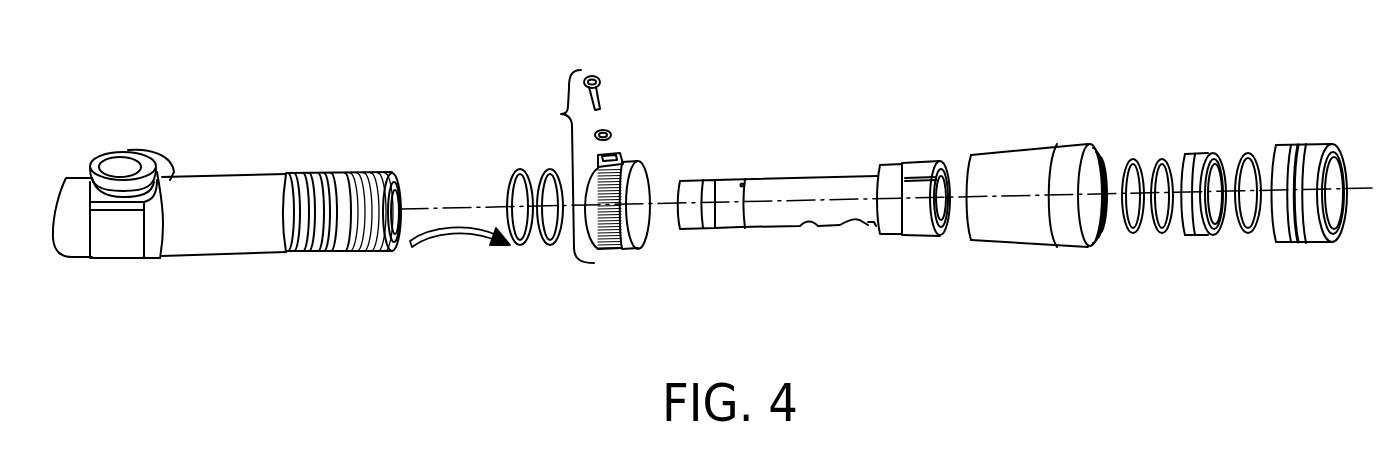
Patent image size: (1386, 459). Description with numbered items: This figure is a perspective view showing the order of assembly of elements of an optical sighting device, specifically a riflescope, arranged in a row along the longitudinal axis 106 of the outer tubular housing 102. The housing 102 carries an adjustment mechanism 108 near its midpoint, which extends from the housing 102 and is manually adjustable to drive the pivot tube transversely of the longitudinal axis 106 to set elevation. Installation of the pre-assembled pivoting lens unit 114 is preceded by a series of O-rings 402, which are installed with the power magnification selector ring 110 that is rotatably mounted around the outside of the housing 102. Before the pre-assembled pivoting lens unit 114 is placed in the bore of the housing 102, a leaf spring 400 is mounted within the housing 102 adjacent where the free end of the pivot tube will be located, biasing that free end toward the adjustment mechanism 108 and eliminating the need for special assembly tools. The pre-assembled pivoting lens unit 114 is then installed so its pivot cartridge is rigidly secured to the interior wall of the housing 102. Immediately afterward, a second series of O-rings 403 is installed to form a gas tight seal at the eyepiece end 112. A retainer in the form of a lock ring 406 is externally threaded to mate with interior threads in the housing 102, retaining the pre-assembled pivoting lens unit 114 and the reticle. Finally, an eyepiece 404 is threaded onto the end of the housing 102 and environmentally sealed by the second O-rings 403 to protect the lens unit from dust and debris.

The outer tubular housing 102 is at (257, 253).
The longitudinal axis 106 is at (1358, 208).
The adjustment mechanism 108 is at (107, 165).
The power magnification selector ring 110 is at (562, 113).
The eyepiece end 112 is at (1023, 268).
The pre-assembled pivoting lens unit 114 is at (802, 173).
The leaf spring 400 is at (460, 238).
The O-rings 402 is at (549, 246).
The second series of O-rings 403 is at (1128, 158).
The eyepiece 404 is at (1291, 145).
The lock ring 406 is at (1210, 236).